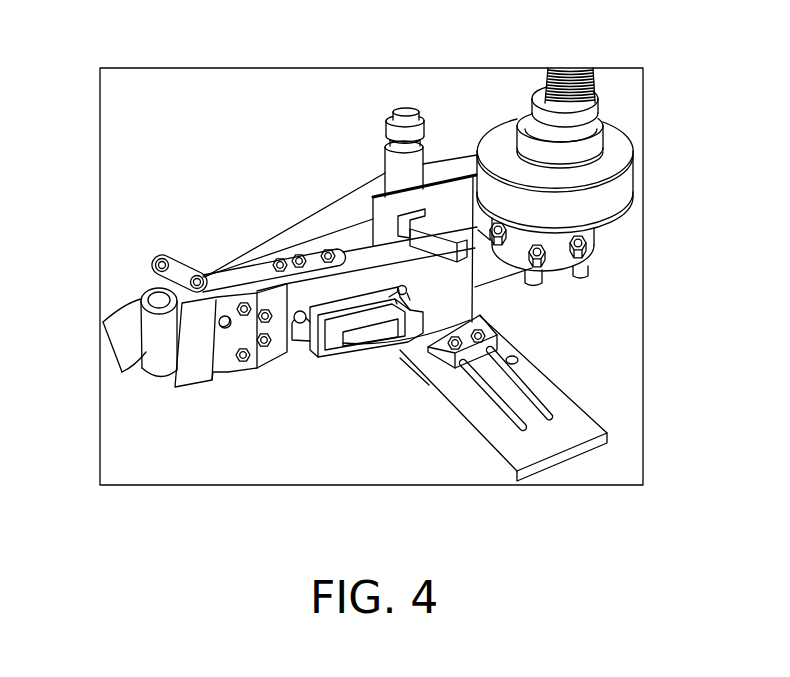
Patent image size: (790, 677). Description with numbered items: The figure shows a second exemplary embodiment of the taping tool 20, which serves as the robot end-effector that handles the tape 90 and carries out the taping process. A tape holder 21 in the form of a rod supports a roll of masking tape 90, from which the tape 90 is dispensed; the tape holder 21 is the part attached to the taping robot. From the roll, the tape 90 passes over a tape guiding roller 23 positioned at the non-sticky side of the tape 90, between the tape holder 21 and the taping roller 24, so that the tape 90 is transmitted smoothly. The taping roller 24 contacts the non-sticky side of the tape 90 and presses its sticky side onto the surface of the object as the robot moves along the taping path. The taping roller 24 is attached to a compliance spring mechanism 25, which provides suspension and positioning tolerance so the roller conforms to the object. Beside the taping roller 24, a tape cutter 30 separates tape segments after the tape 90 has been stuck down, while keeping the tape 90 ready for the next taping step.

The taping tool 20 is at (427, 456).
The tape holder 21 is at (585, 157).
The tape guiding roller 23 is at (380, 135).
The taping roller 24 is at (148, 338).
The compliance spring mechanism 25 is at (457, 297).
The tape cutter 30 is at (200, 357).
The tape 90 is at (320, 228).